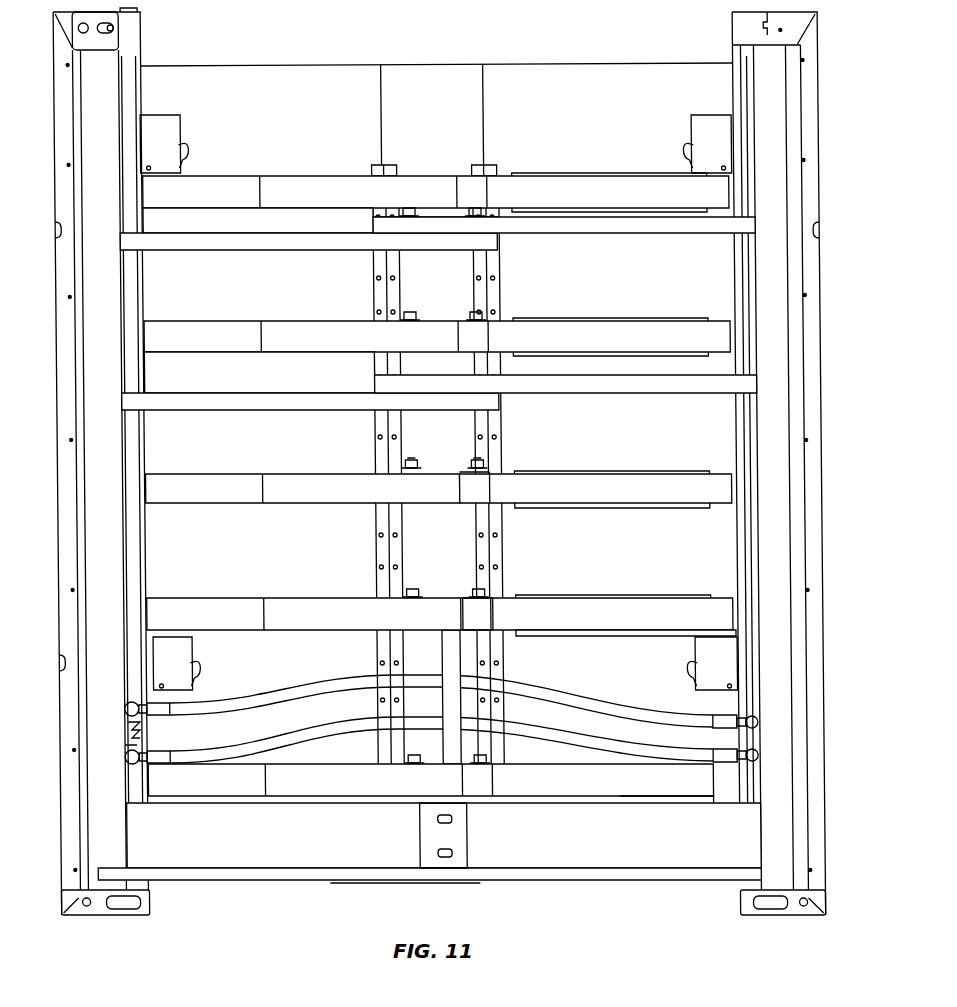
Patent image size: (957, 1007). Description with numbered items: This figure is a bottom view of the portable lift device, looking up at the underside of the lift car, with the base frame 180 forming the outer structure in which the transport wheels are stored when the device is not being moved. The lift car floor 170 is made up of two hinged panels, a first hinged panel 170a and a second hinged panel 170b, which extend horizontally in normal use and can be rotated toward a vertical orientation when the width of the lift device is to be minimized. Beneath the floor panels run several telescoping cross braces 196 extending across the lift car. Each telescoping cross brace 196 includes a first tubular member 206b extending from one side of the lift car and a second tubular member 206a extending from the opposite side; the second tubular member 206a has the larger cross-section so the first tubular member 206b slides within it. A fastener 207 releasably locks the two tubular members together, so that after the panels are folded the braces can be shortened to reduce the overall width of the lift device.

The base frame 180 is at (810, 640).
The lift car floor 170 is at (445, 560).
The first hinged panel 170a is at (267, 560).
The second hinged panel 170b is at (579, 555).
The telescoping cross brace 196 is at (639, 175).
The second tubular member 206a is at (356, 483).
The first tubular member 206b is at (721, 490).
The fastener 207 is at (466, 462).